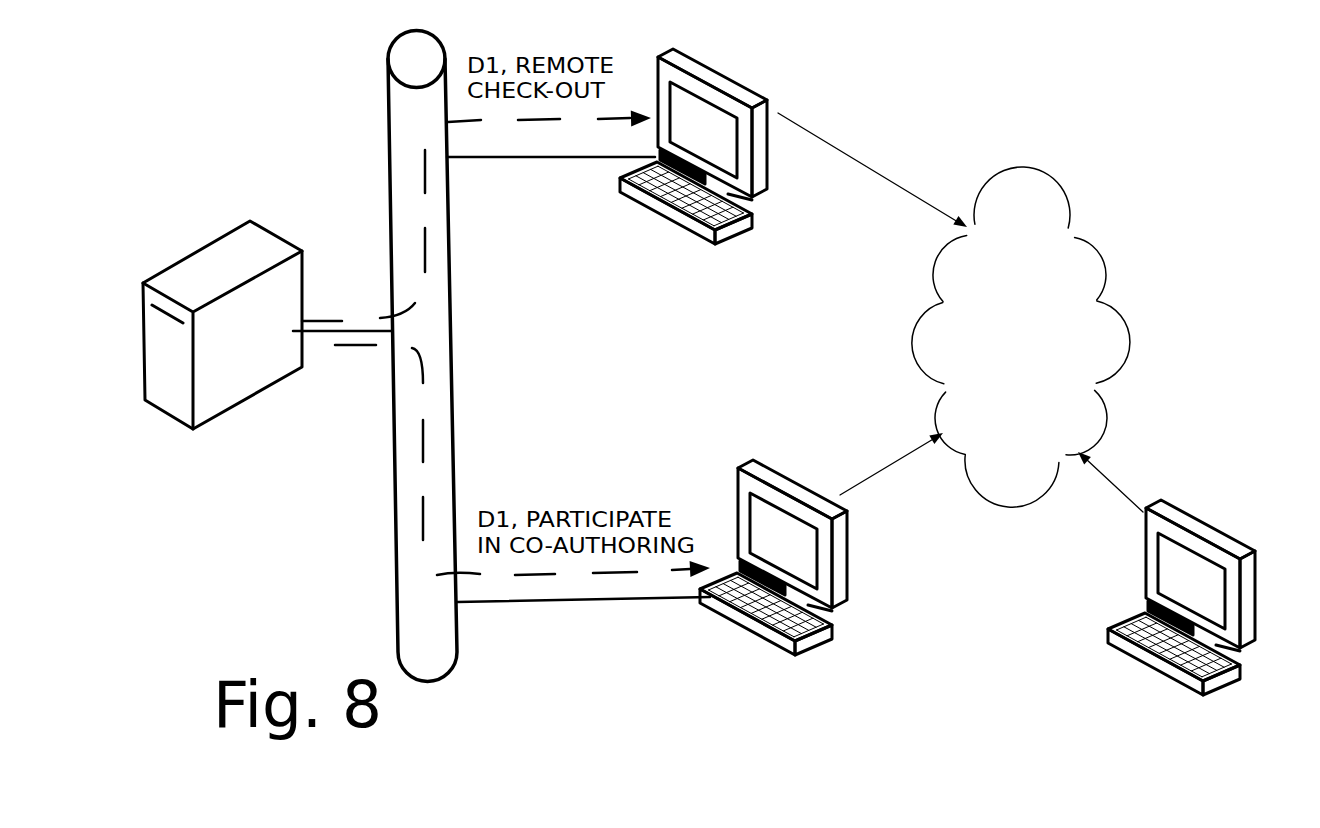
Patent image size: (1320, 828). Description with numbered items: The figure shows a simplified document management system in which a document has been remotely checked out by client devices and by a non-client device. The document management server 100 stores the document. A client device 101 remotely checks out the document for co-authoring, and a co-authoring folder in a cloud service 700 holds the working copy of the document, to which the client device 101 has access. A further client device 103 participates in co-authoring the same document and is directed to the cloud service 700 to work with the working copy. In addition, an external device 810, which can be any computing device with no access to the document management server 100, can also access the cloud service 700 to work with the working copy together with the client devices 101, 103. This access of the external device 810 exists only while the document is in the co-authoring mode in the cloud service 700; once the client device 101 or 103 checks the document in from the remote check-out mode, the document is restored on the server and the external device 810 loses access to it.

The document management server 100 is at (222, 325).
The client device 101 is at (745, 84).
The client device 103 is at (853, 573).
The cloud service 700 is at (1077, 238).
The external device 810 is at (1125, 658).